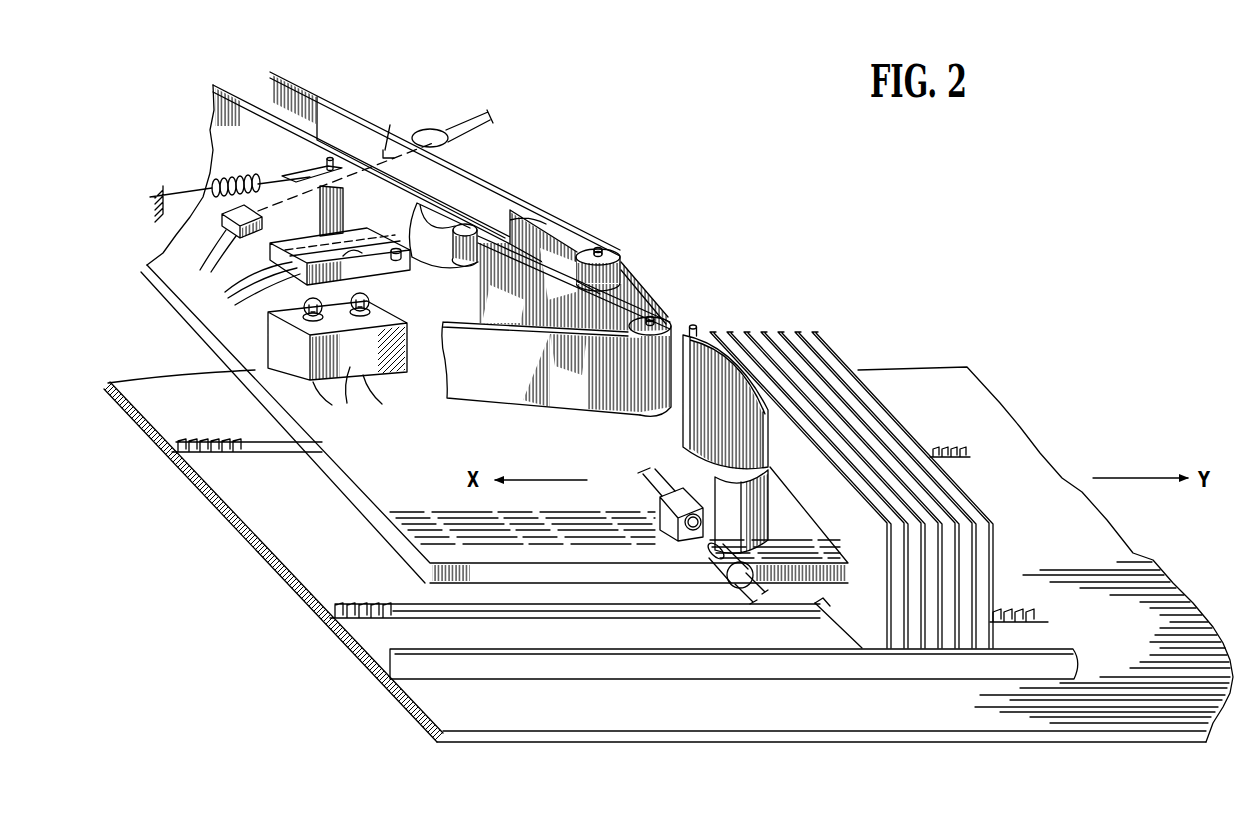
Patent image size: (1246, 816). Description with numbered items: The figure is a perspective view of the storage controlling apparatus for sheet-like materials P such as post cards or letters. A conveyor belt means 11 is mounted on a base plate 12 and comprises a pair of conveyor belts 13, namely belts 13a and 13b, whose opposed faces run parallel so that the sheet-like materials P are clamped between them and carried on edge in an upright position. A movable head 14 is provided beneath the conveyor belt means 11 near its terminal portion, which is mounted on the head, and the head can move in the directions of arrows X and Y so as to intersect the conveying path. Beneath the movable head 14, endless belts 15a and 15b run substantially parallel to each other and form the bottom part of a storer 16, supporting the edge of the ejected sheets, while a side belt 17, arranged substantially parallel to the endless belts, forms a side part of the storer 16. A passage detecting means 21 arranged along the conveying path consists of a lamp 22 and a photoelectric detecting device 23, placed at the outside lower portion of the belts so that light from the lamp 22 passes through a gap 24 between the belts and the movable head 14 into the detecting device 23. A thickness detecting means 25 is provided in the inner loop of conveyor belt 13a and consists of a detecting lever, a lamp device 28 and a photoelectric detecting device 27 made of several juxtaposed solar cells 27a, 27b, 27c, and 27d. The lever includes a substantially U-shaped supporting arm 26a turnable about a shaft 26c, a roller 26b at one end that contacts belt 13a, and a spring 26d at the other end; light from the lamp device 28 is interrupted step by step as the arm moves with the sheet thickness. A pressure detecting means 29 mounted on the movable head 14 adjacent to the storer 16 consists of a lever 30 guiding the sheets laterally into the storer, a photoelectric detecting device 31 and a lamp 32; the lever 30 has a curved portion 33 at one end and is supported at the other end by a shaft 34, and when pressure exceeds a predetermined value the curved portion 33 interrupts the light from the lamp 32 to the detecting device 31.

The conveyor belt means 11 is at (630, 285).
The base plate 12 is at (290, 553).
The conveyor belts 13 is at (339, 100).
The conveyor belt 13a is at (498, 393).
The conveyor belt 13b is at (550, 214).
The movable head 14 is at (394, 527).
The endless belt 15a is at (386, 601).
The endless belt 15b is at (235, 455).
The storer 16 is at (1020, 451).
The side belt 17 is at (583, 668).
The passage detecting means 21 is at (405, 108).
The lamp 22 is at (433, 132).
The photoelectric detecting device 23 is at (222, 232).
The gap 24 is at (228, 206).
The thickness detecting means 25 is at (452, 268).
The supporting arm 26a is at (430, 200).
The roller 26b is at (473, 226).
The shaft 26c is at (328, 160).
The spring 26d is at (250, 160).
The photoelectric detecting device 27 is at (287, 262).
The solar cell 27a is at (394, 262).
The solar cell 27b is at (331, 229).
The solar cell 27c is at (357, 263).
The solar cell 27d is at (301, 276).
The lamp device 28 is at (354, 383).
The pressure detecting means 29 is at (628, 492).
The lever 30 is at (683, 424).
The photoelectric detecting device 31 is at (666, 513).
The lamp 32 is at (724, 586).
The curved portion 33 is at (763, 525).
The shaft 34 is at (696, 324).
The sheet-like materials P is at (562, 238).